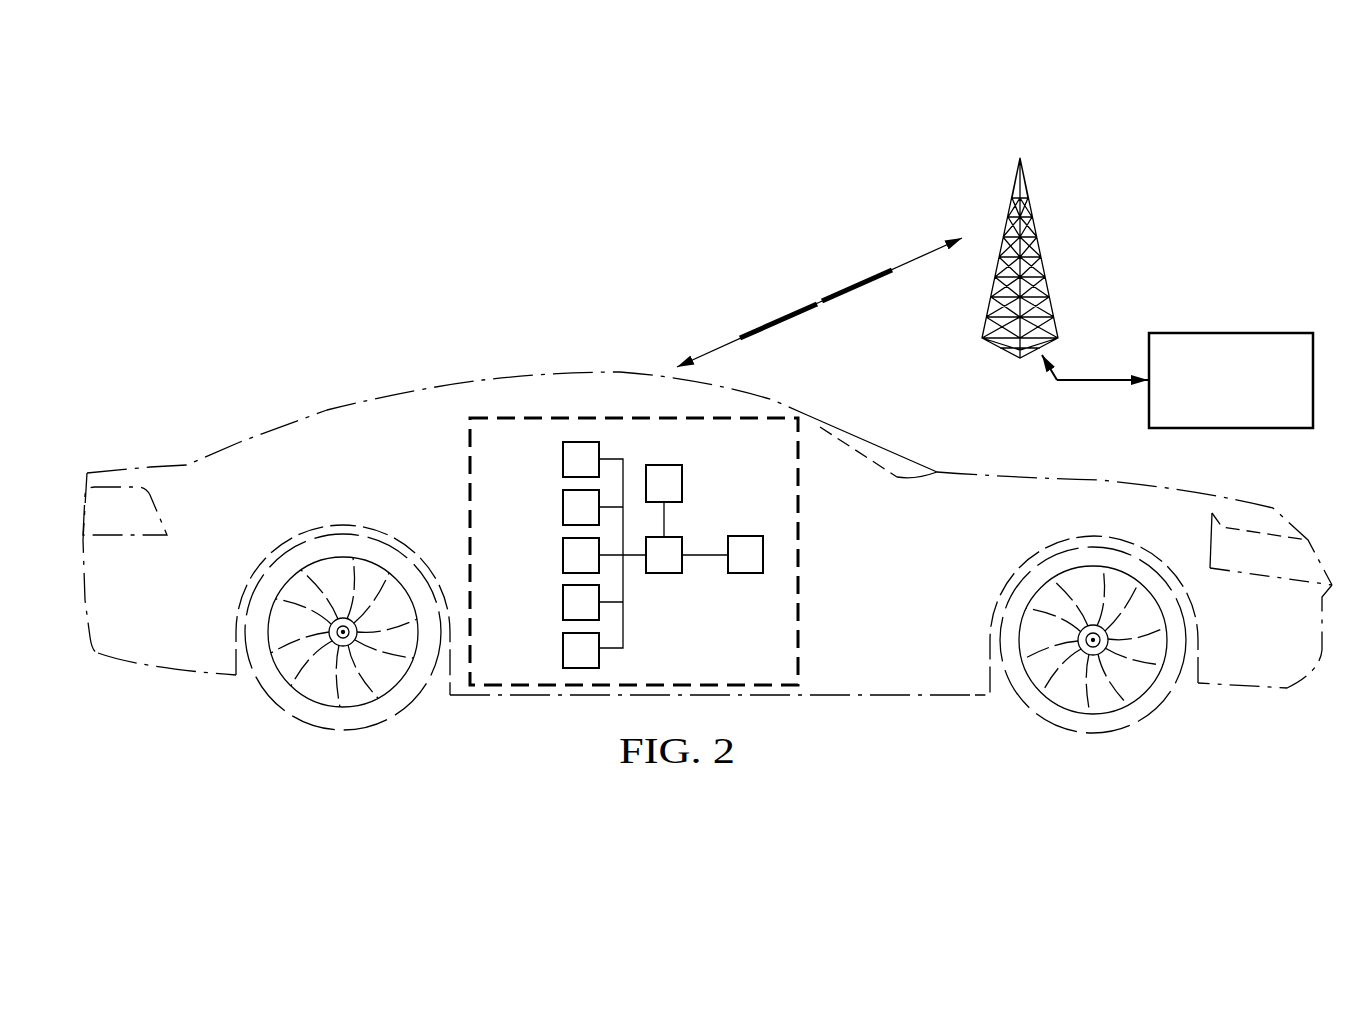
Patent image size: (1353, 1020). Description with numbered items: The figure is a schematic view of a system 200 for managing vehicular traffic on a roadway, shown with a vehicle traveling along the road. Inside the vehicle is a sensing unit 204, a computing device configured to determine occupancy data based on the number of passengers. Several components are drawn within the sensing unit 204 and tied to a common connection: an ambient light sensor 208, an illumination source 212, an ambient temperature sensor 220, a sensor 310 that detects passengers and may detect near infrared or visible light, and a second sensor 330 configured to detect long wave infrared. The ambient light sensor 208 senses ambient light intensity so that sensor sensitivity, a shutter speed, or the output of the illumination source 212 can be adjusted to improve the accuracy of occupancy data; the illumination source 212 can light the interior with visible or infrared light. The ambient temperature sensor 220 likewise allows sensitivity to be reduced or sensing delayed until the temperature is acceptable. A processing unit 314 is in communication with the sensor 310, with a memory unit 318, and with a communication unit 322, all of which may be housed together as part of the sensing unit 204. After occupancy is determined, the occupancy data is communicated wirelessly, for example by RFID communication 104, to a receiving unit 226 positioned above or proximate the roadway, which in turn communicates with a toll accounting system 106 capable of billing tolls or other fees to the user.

The system 200 is at (388, 158).
The communication 104 is at (806, 308).
The receiving unit 226 is at (1043, 257).
The toll accounting system 106 is at (1228, 333).
The sensing unit 204 is at (468, 477).
The ambient light sensor 208 is at (563, 452).
The illumination source 212 is at (563, 500).
The ambient temperature sensor 220 is at (563, 548).
The sensor 310 is at (563, 606).
The second sensor 330 is at (563, 653).
The processing unit 314 is at (672, 574).
The memory unit 318 is at (682, 483).
The communication unit 322 is at (745, 574).